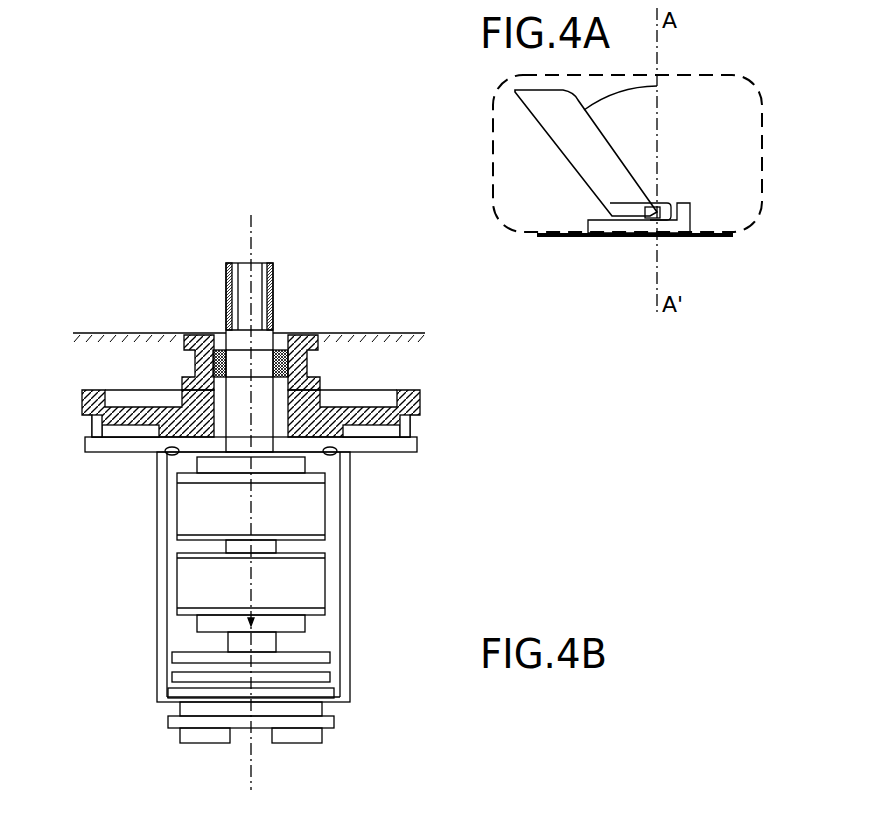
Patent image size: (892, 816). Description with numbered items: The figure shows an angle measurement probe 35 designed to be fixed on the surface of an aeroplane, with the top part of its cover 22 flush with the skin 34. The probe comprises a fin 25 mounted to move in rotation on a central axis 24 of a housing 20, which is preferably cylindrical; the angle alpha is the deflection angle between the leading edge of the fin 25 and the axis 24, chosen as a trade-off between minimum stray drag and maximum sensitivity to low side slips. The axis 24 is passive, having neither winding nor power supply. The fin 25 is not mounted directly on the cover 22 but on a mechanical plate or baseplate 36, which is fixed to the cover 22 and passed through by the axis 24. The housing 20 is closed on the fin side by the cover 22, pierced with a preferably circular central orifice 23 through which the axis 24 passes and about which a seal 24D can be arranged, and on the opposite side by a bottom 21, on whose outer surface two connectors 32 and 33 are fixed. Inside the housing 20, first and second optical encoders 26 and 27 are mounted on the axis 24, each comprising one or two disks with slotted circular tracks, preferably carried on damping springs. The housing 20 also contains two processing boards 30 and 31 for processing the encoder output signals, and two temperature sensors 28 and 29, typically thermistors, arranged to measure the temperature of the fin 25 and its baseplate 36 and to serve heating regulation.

In FIG. 4B, the housing 20 is at (347, 575).
In FIG. 4B, the bottom 21 is at (310, 697).
In FIG. 4B, the cover 22 is at (302, 402).
In FIG. 4B, the orifice 23 is at (295, 383).
In FIG. 4B, the central axis 24 is at (217, 360).
In FIG. 4B, the shaft seal 24D is at (283, 352).
In FIG. 4A, the fin 25 is at (588, 130).
In FIG. 4B, the first optical encoder 26 is at (180, 583).
In FIG. 4B, the second optical encoder 27 is at (317, 505).
In FIG. 4B, the temperature sensor 28 is at (170, 458).
In FIG. 4B, the temperature sensor 29 is at (332, 455).
In FIG. 4B, the processing board 30 is at (318, 657).
In FIG. 4B, the processing board 31 is at (180, 679).
In FIG. 4B, the connector 32 is at (195, 736).
In FIG. 4B, the connector 33 is at (307, 733).
In FIG. 4B, the skin 34 is at (110, 333).
In FIG. 4B, the angle measurement probe 35 is at (390, 547).
In FIG. 4A, the plate 36 is at (657, 238).